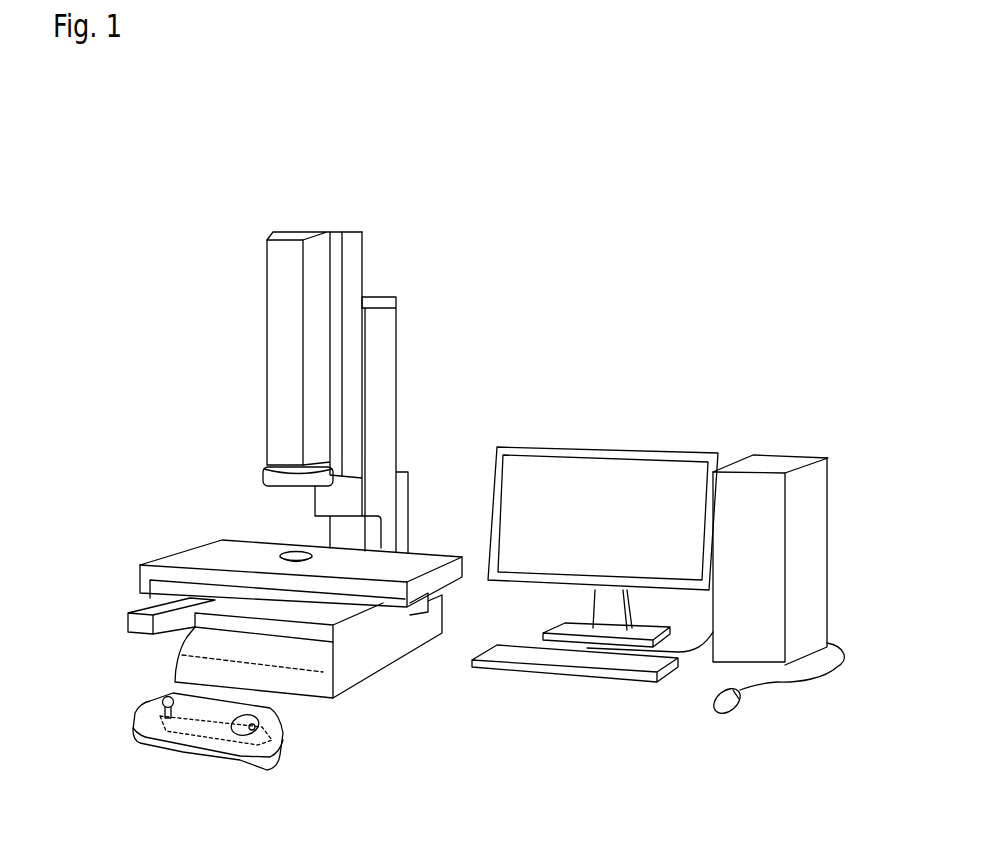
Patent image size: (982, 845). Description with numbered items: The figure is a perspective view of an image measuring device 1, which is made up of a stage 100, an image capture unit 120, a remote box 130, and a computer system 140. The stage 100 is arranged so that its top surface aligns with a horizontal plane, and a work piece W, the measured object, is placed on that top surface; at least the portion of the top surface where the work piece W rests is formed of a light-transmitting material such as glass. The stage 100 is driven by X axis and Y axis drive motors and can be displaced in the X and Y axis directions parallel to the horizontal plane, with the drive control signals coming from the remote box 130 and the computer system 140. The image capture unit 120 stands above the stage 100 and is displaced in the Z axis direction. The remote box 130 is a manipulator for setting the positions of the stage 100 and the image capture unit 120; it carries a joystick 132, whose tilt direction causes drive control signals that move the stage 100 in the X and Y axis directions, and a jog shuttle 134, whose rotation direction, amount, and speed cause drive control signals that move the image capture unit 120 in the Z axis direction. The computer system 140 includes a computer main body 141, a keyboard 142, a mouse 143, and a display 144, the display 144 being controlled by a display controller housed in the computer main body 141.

The image measuring device 1 is at (500, 108).
The stage 100 is at (188, 558).
The work piece W is at (283, 552).
The image capture unit 120 is at (282, 289).
The remote box 130 is at (287, 767).
The joystick 132 is at (137, 710).
The jog shuttle 134 is at (240, 760).
The computer system 140 is at (840, 377).
The computer main body 141 is at (773, 467).
The keyboard 142 is at (585, 662).
The mouse 143 is at (720, 717).
The display 144 is at (568, 468).